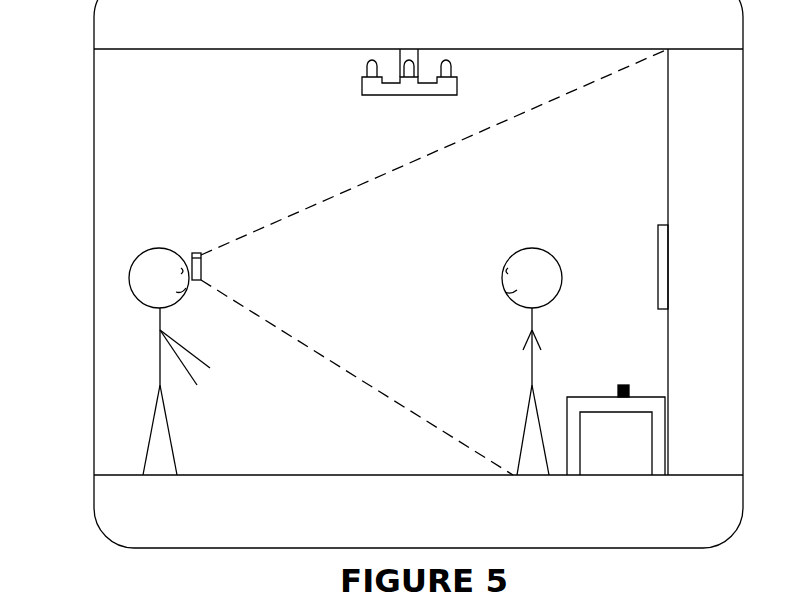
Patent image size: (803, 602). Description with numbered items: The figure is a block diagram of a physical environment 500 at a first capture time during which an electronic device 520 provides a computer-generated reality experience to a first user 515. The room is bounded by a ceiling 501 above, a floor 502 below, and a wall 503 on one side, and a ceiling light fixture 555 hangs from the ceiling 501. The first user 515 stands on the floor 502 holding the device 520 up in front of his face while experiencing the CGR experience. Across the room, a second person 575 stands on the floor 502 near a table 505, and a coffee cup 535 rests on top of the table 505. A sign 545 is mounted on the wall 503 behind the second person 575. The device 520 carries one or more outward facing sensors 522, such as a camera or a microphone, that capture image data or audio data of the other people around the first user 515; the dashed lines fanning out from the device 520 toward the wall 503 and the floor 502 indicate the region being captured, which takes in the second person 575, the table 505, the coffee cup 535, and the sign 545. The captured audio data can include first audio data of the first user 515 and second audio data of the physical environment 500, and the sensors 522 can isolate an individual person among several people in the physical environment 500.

The physical environment 500 is at (65, 53).
The ceiling 501 is at (418, 25).
The floor 502 is at (418, 498).
The wall 503 is at (702, 262).
The table 505 is at (610, 397).
The first user 515 is at (165, 248).
The electronic device 520 is at (199, 281).
The outward facing sensors 522 is at (196, 252).
The coffee cup 535 is at (628, 385).
The sign 545 is at (658, 265).
The ceiling light fixture 555 is at (407, 95).
The second person 575 is at (526, 418).